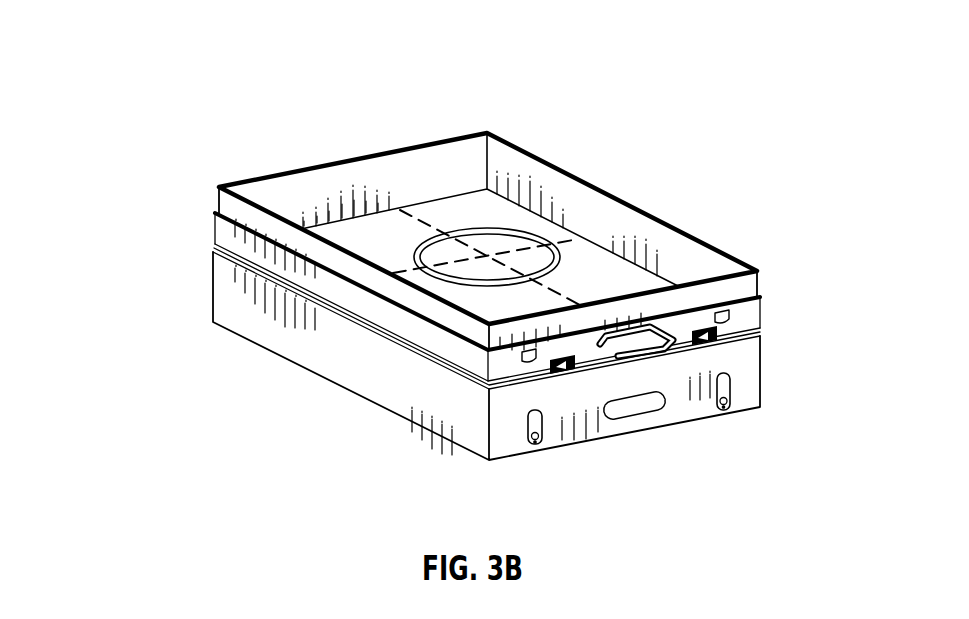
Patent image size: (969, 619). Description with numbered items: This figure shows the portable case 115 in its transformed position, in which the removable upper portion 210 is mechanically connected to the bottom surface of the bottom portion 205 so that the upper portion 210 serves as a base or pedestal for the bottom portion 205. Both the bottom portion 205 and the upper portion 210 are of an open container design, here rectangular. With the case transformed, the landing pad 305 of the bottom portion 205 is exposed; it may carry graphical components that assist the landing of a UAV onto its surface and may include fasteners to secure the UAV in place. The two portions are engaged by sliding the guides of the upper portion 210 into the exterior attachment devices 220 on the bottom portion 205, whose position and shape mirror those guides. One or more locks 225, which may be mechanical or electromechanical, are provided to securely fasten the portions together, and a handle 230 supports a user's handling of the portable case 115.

The portable case 115 is at (193, 106).
The bottom portion 205 is at (748, 292).
The upper portion 210 is at (375, 378).
The exterior attachment device 220 is at (717, 332).
The lock 225 is at (730, 380).
The handle 230 is at (652, 355).
The landing pad 305 is at (530, 266).